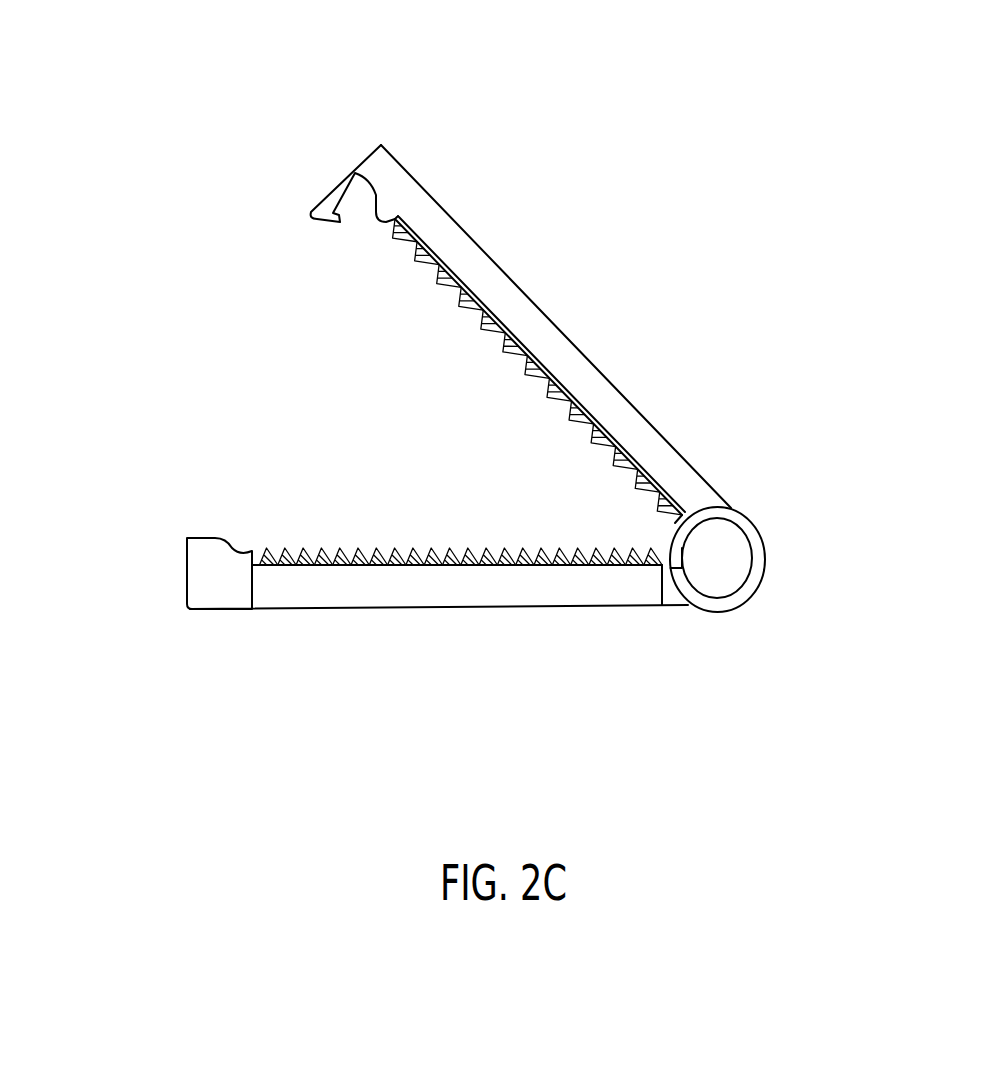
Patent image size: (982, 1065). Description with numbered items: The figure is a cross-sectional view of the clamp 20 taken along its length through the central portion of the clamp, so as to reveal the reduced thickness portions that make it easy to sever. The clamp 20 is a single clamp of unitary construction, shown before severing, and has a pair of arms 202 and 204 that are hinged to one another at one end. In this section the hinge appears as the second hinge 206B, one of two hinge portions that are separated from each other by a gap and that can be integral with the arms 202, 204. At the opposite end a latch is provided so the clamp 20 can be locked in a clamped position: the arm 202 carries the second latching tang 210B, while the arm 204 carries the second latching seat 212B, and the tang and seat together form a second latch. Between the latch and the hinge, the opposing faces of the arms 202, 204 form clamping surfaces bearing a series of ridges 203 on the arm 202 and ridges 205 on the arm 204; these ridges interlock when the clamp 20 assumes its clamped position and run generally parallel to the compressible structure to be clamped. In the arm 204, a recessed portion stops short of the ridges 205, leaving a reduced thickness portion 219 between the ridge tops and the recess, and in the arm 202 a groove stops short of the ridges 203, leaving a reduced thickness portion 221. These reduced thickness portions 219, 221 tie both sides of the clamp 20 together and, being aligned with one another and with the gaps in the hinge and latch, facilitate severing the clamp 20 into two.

The clamp 20 is at (648, 108).
The arm 202 is at (572, 349).
The ridges 203 is at (535, 383).
The arm 204 is at (422, 600).
The ridges 205 is at (565, 553).
The second hinge 206B is at (755, 578).
The second latching tang 210B is at (337, 183).
The second latching seat 212B is at (210, 568).
The reduced thickness portion 219 is at (452, 552).
The reduced thickness portion 221 is at (452, 302).